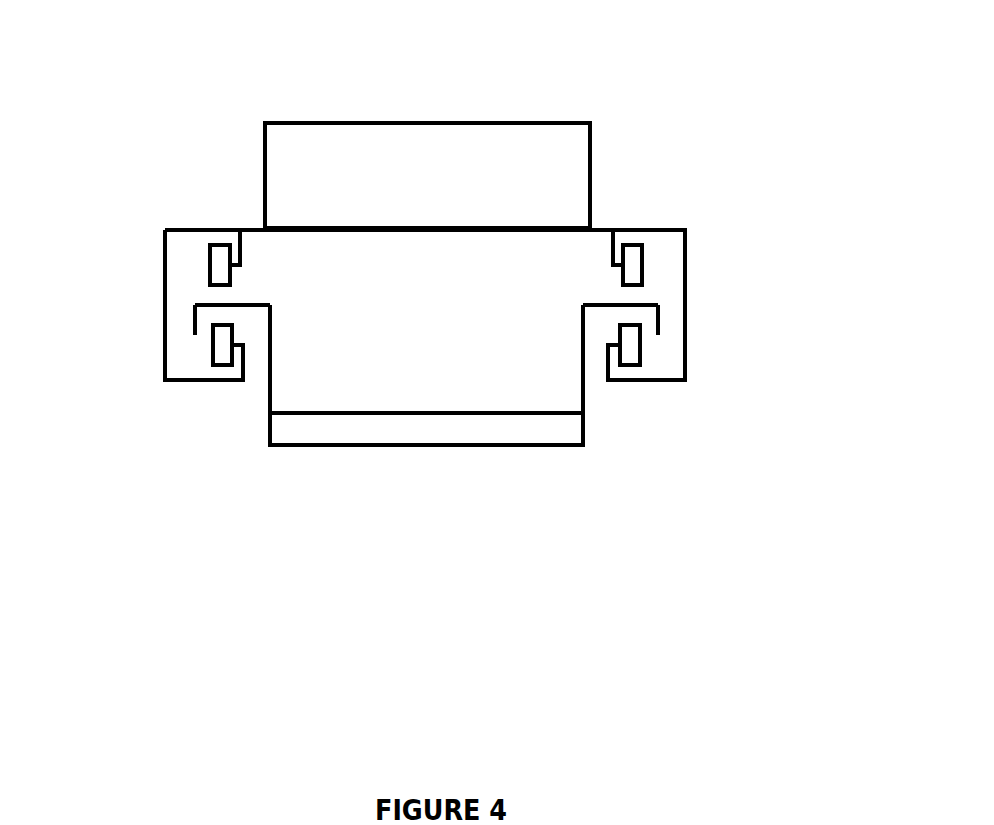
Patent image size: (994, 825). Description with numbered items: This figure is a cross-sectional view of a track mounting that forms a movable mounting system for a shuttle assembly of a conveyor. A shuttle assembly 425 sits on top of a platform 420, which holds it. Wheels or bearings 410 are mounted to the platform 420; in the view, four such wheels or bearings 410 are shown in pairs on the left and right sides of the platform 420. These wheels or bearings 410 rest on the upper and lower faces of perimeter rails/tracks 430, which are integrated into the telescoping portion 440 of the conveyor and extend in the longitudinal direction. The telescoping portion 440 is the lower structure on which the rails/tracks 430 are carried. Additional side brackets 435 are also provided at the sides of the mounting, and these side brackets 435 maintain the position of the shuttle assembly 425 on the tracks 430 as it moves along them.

The wheels or bearings 410 is at (638, 348).
The platform 420 is at (565, 227).
The shuttle assembly 425 is at (350, 123).
The perimeter rails/tracks 430 is at (585, 300).
The side brackets 435 is at (193, 313).
The telescoping portion 440 is at (335, 415).